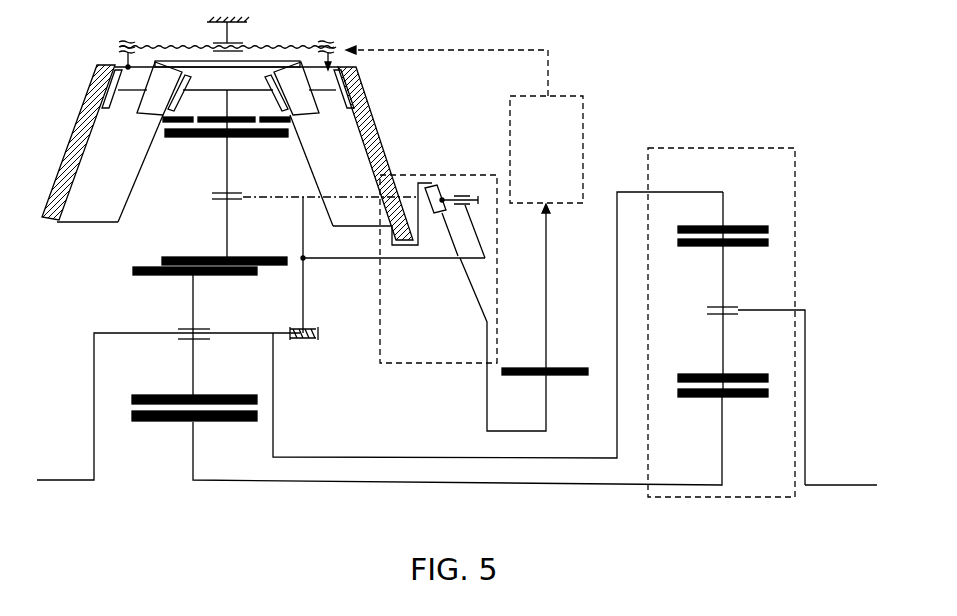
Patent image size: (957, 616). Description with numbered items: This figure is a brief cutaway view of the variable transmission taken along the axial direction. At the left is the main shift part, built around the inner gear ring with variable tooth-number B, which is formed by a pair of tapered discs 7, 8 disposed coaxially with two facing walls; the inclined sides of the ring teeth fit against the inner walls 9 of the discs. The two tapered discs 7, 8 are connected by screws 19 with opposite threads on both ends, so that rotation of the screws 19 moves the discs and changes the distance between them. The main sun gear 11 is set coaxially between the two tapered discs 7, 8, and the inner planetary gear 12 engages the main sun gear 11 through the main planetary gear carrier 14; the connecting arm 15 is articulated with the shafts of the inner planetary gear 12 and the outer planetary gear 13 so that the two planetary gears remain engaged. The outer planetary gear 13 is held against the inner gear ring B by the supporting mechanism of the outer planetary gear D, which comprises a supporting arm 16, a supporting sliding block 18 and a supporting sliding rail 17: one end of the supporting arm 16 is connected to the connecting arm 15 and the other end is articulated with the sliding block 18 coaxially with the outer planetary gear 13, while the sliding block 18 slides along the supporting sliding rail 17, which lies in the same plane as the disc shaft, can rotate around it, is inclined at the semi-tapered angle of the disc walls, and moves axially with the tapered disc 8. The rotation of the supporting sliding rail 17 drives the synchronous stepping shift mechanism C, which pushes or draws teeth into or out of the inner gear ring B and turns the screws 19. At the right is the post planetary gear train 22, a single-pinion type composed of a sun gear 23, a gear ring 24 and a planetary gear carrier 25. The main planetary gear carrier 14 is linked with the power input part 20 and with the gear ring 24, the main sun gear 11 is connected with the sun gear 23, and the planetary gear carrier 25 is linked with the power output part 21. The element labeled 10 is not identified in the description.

The tapered disc 7 is at (90, 85).
The tapered disc 8 is at (368, 100).
The screws 19 is at (265, 45).
The inner gear ring with variable tooth-number B is at (163, 119).
The outer planetary gear 13 is at (258, 138).
The inner walls 9 is at (128, 201).
The rotor housing bottom 10 is at (66, 196).
The inner planetary gear 12 is at (153, 276).
The main sun gear 11 is at (182, 422).
The power input part 20 is at (72, 478).
The connecting arm of the planetary gear 15 is at (307, 292).
The main planetary gear carrier 14 is at (277, 420).
The supporting arm 16 is at (430, 260).
The supporting sliding rail 17 is at (466, 287).
The supporting sliding block 18 is at (439, 186).
The supporting mechanism of the outer planetary gear D is at (448, 364).
The synchronous stepping shift mechanism C is at (584, 138).
The post planetary gear train 22 is at (733, 148).
The gear ring 24 is at (743, 226).
The sun gear 23 is at (715, 398).
The planetary gear carrier 25 is at (802, 408).
The power output part 21 is at (818, 484).